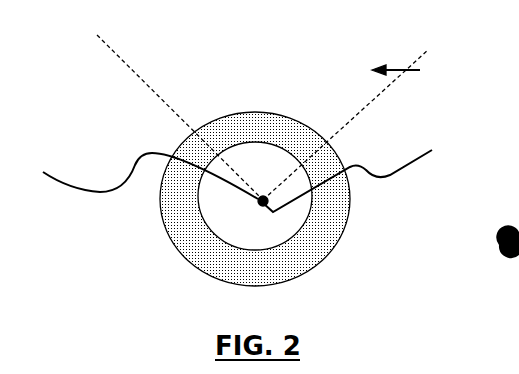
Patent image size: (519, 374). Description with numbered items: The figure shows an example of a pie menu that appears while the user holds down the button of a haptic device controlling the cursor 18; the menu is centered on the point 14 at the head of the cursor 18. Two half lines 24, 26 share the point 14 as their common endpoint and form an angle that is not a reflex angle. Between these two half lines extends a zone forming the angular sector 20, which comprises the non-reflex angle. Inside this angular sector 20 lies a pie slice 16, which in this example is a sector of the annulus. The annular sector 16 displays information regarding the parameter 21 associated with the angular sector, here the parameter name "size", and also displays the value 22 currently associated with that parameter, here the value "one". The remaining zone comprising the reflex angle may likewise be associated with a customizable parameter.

The point 14 is at (135, 176).
The pie slice 16 is at (253, 112).
The cursor 18 is at (363, 171).
The angular sector 20 is at (420, 70).
The parameter 21 is at (224, 120).
The value 22 is at (307, 133).
The half line 24 is at (130, 70).
The half line 26 is at (383, 90).